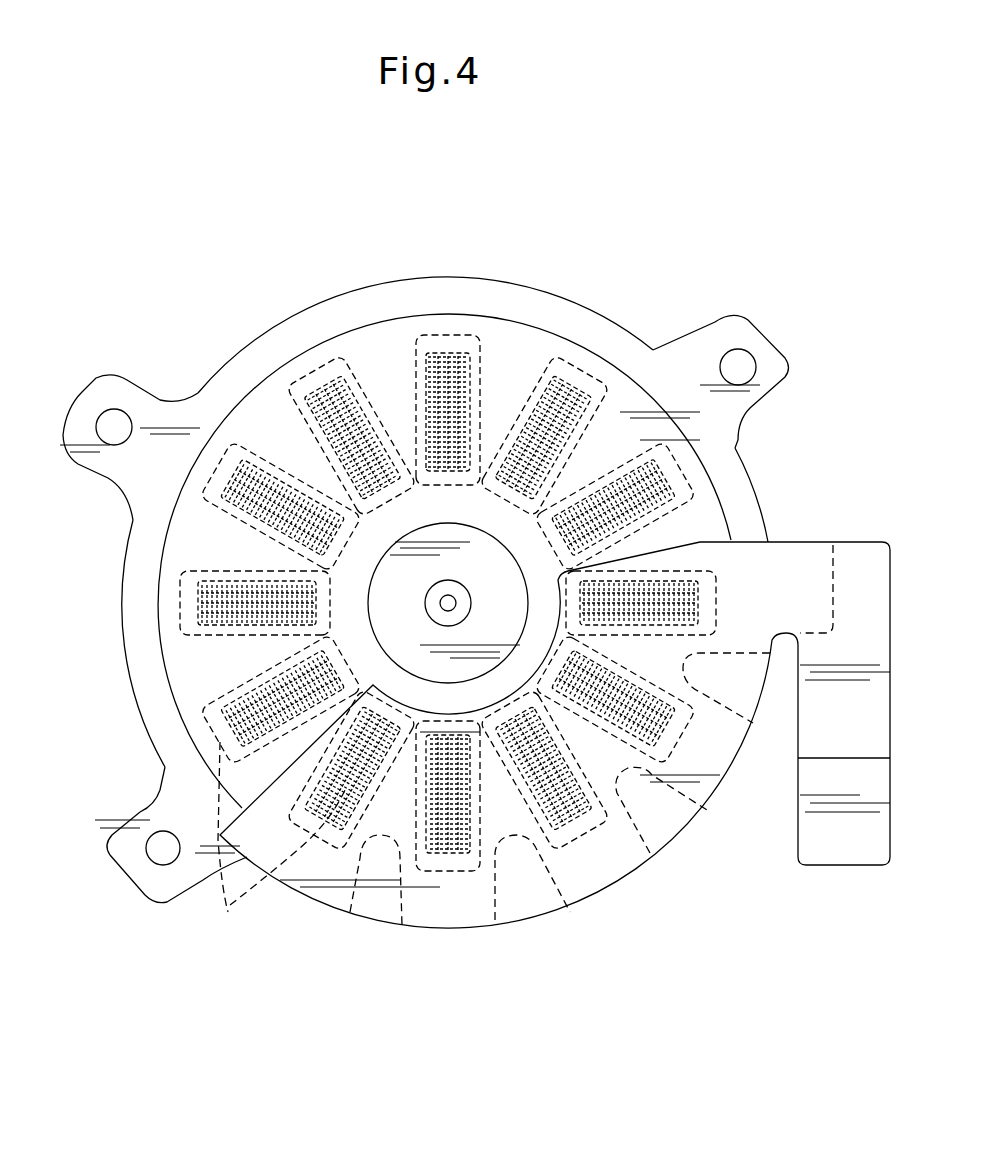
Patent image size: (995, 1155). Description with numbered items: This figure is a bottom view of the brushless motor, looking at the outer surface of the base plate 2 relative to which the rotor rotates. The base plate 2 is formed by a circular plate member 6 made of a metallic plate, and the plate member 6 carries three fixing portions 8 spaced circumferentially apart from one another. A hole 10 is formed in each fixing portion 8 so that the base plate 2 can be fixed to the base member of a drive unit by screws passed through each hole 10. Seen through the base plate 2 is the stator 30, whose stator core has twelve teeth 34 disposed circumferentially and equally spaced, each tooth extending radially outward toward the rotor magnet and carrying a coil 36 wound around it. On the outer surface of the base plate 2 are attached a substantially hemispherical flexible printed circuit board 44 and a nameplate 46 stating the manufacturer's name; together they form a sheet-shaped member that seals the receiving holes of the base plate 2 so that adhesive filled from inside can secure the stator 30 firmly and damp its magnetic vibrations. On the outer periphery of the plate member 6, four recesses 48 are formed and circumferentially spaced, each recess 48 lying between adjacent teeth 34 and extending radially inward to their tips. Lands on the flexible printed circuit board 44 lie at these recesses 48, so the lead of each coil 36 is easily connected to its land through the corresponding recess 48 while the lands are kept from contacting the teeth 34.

The base plate 2 is at (548, 286).
The circular plate member 6 is at (306, 326).
The fixing portion 8 is at (730, 322).
The hole 10 is at (748, 358).
The stator 30 is at (214, 573).
The teeth 34 is at (228, 912).
The coil 36 is at (200, 604).
The flexible printed circuit board 44 is at (670, 816).
The nameplate 46 is at (398, 347).
The recess 48 is at (350, 912).